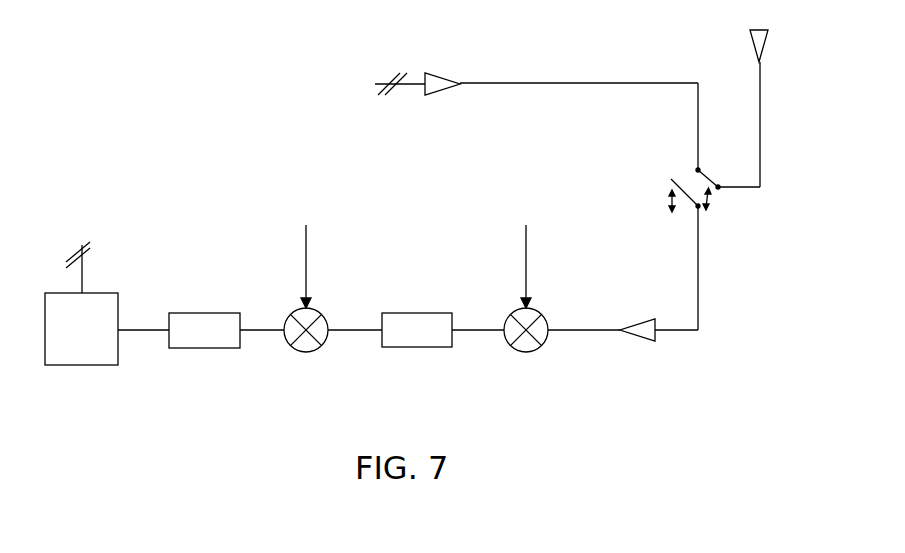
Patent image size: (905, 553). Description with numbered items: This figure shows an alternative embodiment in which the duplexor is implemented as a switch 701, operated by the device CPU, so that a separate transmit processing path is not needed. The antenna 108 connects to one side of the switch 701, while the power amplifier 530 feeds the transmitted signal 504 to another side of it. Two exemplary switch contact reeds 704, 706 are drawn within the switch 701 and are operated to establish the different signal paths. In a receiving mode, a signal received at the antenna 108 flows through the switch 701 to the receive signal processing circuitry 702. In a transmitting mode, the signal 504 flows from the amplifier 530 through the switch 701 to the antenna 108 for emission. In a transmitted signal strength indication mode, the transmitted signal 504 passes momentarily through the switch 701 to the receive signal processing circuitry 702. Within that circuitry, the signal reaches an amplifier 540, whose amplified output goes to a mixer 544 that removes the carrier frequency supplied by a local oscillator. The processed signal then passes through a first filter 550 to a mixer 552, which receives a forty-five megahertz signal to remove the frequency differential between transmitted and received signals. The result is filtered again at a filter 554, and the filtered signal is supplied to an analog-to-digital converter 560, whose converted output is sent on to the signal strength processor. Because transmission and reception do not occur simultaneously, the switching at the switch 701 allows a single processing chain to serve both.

The antenna 108 is at (750, 45).
The transmitted signal 504 is at (698, 118).
The power amplifier 530 is at (454, 80).
The amplifier 540 is at (643, 319).
The mixer 544 is at (515, 350).
The first filter 550 is at (400, 347).
The mixer 552 is at (294, 350).
The filter 554 is at (205, 313).
The analog-to-digital converter 560 is at (65, 365).
The switch 701 is at (733, 215).
The receive signal processing circuitry 702 is at (690, 355).
The switch contact reed 704 is at (706, 177).
The switch contact reed 706 is at (680, 185).